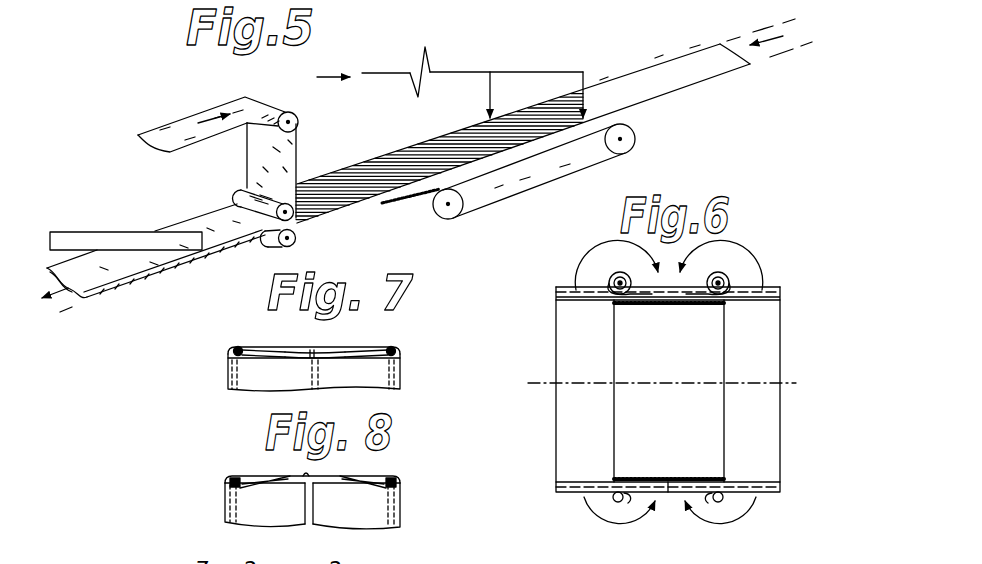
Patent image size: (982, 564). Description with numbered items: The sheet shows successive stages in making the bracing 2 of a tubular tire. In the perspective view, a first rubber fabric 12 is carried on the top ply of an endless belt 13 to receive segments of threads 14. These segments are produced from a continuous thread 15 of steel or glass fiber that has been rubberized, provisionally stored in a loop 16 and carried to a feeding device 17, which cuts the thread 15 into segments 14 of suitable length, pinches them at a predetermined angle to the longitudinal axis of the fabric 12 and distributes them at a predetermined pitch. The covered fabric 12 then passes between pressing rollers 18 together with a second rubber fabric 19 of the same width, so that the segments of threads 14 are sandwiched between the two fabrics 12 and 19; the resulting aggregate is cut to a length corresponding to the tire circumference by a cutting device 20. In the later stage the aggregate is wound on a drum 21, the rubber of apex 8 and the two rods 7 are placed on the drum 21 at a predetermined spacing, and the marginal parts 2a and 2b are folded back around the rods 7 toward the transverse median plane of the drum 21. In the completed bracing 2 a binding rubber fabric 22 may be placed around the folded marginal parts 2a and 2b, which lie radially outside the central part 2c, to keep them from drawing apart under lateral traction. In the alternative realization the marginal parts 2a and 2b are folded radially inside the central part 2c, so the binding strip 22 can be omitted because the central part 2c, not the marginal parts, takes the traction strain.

In FIG. 7, the bracing 2 is at (406, 378).
In FIG. 8, the bracing 2 is at (406, 505).
In FIG. 6, the marginal part 2a is at (642, 272).
In FIG. 7, the marginal part 2a is at (298, 352).
In FIG. 8, the marginal part 2a is at (282, 485).
In FIG. 6, the marginal part 2b is at (696, 272).
In FIG. 7, the marginal part 2b is at (336, 356).
In FIG. 8, the marginal part 2b is at (337, 485).
In FIG. 6, the central part 2c is at (668, 493).
In FIG. 7, the central part 2c is at (305, 356).
In FIG. 8, the central part 2c is at (304, 484).
In FIG. 6, the rods 7 is at (614, 503).
In FIG. 7, the rods 7 is at (233, 350).
In FIG. 8, the rods 7 is at (229, 481).
In FIG. 6, the rubber of apex 8 is at (626, 500).
In FIG. 7, the rubber of apex 8 is at (248, 350).
In FIG. 8, the rubber of apex 8 is at (242, 484).
In FIG. 5, the first rubber fabric 12 is at (671, 70).
In FIG. 6, the first rubber fabric 12 is at (570, 299).
In FIG. 5, the endless belt 13 is at (513, 173).
In FIG. 5, the segments of threads 14 is at (390, 176).
In FIG. 6, the segments of threads 14 is at (557, 296).
In FIG. 5, the continuous thread 15 is at (385, 73).
In FIG. 5, the loop 16 is at (434, 55).
In FIG. 5, the feeding device 17 is at (541, 66).
In FIG. 5, the pressing rollers 18 is at (298, 226).
In FIG. 5, the second rubber fabric 19 is at (262, 161).
In FIG. 6, the second rubber fabric 19 is at (557, 287).
In FIG. 5, the cutting device 20 is at (98, 229).
In FIG. 6, the drum 21 is at (680, 377).
In FIG. 7, the binding rubber fabric 22 is at (307, 352).